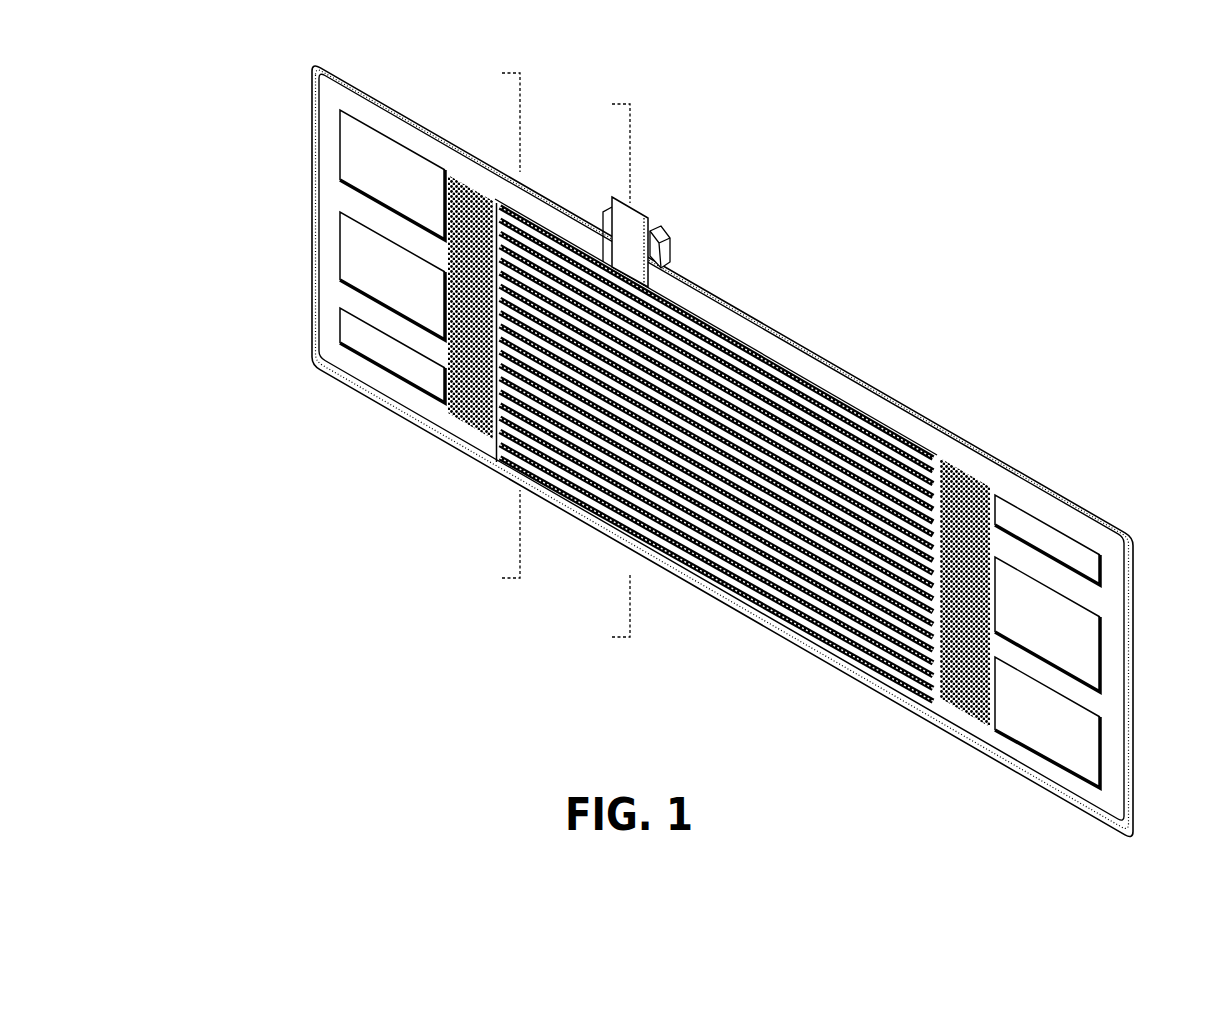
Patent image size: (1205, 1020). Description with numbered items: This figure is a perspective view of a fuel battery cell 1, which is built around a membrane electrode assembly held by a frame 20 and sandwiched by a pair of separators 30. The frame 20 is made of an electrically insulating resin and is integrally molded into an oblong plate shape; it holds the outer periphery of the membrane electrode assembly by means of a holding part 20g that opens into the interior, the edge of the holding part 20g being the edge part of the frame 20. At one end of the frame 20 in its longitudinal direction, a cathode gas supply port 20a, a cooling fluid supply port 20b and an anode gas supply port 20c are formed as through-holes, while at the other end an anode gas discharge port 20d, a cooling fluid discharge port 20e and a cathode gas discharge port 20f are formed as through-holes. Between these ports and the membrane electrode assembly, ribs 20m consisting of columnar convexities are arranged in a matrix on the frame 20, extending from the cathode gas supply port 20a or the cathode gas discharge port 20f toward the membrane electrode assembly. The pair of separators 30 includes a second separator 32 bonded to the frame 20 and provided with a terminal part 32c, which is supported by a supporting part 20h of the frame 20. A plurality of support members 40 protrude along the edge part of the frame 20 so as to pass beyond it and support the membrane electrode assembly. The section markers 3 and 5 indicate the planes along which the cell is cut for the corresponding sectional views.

The fuel battery cell 1 is at (709, 436).
The frame 20 is at (743, 305).
The cathode gas supply port 20a is at (340, 147).
The cooling fluid supply port 20b is at (340, 245).
The anode gas supply port 20c is at (340, 330).
The anode gas discharge port 20d is at (1100, 570).
The cooling fluid discharge port 20e is at (1100, 655).
The cathode gas discharge port 20f is at (1100, 750).
The holding part 20g is at (672, 299).
The supporting part 20h is at (668, 251).
The ribs 20m is at (490, 195).
The pair of separators 30 is at (715, 396).
The second separator 32 is at (560, 232).
The terminal part 32c is at (632, 214).
The support members 40 is at (500, 197).
The section line 3- 3 is at (503, 73).
The section line 5- 5 is at (613, 105).